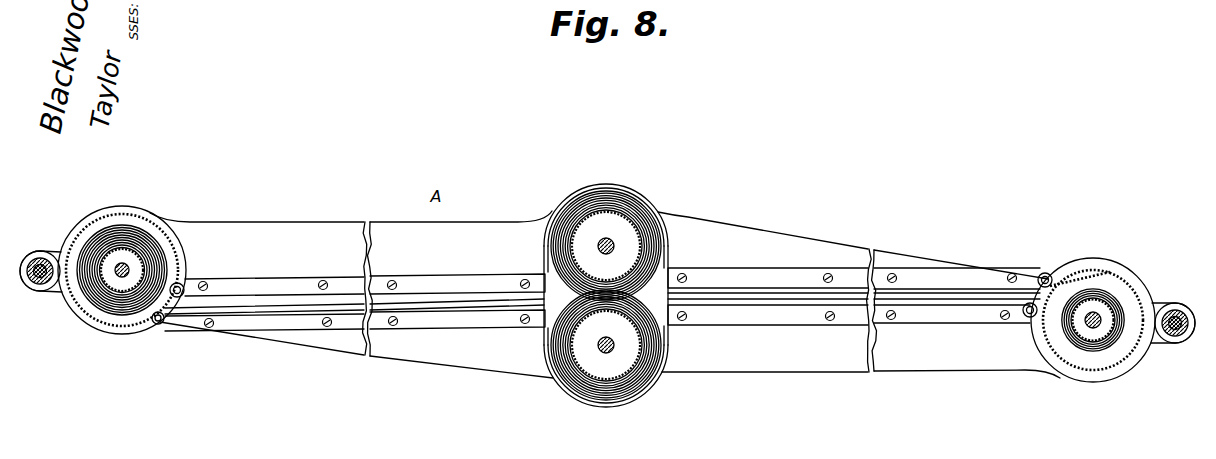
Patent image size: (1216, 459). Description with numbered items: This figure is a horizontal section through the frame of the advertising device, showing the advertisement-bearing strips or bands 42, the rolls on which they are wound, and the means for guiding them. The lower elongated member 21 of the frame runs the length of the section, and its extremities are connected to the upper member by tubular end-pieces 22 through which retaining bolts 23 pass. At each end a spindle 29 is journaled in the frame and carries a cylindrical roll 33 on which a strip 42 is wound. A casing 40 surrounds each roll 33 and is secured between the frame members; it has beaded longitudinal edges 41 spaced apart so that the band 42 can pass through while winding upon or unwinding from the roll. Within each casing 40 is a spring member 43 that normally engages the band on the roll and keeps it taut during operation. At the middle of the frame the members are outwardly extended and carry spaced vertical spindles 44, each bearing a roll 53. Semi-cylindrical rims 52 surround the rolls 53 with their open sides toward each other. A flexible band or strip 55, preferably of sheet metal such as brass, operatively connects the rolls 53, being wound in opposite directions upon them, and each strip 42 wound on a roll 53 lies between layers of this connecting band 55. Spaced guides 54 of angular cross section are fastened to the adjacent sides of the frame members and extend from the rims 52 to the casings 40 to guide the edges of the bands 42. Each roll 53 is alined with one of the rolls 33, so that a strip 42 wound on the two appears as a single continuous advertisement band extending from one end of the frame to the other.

The lower elongated member 21 is at (783, 364).
The tubular end-pieces 22 is at (55, 254).
The retaining bolts 23 is at (45, 258).
The spindles 29 is at (129, 262).
The cylindrical rolls 33 is at (125, 292).
The casing 40 is at (79, 312).
The beaded longitudinal edges 41 is at (181, 285).
The advertising strips or bands 42 is at (268, 306).
The spring member 43 is at (90, 304).
The vertical spindles 44 is at (608, 242).
The semi-cylindrical rims 52 is at (664, 214).
The rolls 53 is at (585, 220).
The spaced guides 54 is at (780, 276).
The flexible band or strip 55 is at (552, 249).